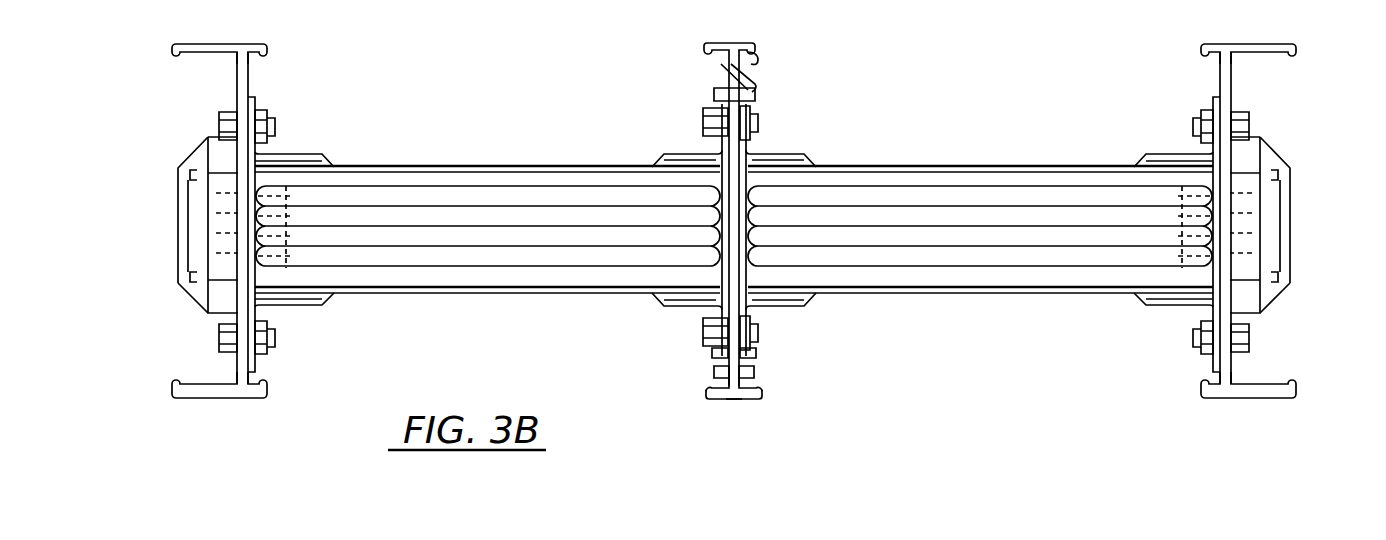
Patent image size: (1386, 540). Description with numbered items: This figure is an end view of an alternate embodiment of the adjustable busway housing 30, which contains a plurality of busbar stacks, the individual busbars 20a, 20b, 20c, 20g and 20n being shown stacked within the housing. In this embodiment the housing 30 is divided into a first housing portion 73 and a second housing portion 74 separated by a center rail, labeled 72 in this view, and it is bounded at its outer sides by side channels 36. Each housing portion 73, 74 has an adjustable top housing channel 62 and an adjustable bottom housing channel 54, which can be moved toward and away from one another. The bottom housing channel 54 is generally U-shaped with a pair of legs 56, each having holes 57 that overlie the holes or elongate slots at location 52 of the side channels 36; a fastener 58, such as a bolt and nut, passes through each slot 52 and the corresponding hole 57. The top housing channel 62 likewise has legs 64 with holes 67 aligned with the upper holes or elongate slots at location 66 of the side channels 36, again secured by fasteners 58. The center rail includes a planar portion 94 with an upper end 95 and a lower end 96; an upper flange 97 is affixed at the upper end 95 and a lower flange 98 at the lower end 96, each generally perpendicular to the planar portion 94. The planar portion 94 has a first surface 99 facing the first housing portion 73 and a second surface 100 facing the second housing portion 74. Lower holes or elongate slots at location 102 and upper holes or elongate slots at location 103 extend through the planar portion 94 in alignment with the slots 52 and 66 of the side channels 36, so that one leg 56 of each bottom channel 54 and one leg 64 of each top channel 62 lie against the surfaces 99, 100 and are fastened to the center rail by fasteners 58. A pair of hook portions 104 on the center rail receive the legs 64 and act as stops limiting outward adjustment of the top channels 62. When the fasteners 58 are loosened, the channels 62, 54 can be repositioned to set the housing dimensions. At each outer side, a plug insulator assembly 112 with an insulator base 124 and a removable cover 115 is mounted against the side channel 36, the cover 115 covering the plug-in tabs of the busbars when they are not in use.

The busbar 20a is at (505, 192).
The busbar 20b is at (531, 213).
The busbar 20c is at (513, 240).
The busbar 20g is at (367, 179).
The busbar 20n is at (571, 280).
The busway housing 30 is at (734, 210).
The side channel 36 is at (189, 44).
The elongate slot 52 is at (240, 362).
The bottom housing channel 54 is at (437, 294).
The leg 56 is at (248, 363).
The hole 57 is at (704, 333).
The fastener 58 is at (273, 327).
The adjustable top housing channel 62 is at (495, 140).
The leg 64 is at (253, 108).
The upper elongate slot 66 is at (234, 107).
The hole 67 is at (710, 123).
The center post 72 is at (912, 75).
The first housing portion 73 is at (357, 114).
The second housing portion 74 is at (1101, 106).
The planar portion 94 is at (763, 391).
The upper end 95 is at (758, 62).
The lower end 96 is at (718, 385).
The upper flange 97 is at (711, 42).
The lower flange 98 is at (731, 400).
The first surface 99 is at (724, 369).
The second surface 100 is at (753, 370).
The lower elongate slot 102 is at (760, 315).
The upper elongate slot 103 is at (748, 108).
The hook portion 104 is at (727, 75).
The insulator assembly 112 is at (202, 141).
The removable cover 115 is at (178, 247).
The insulator base 124 is at (208, 313).